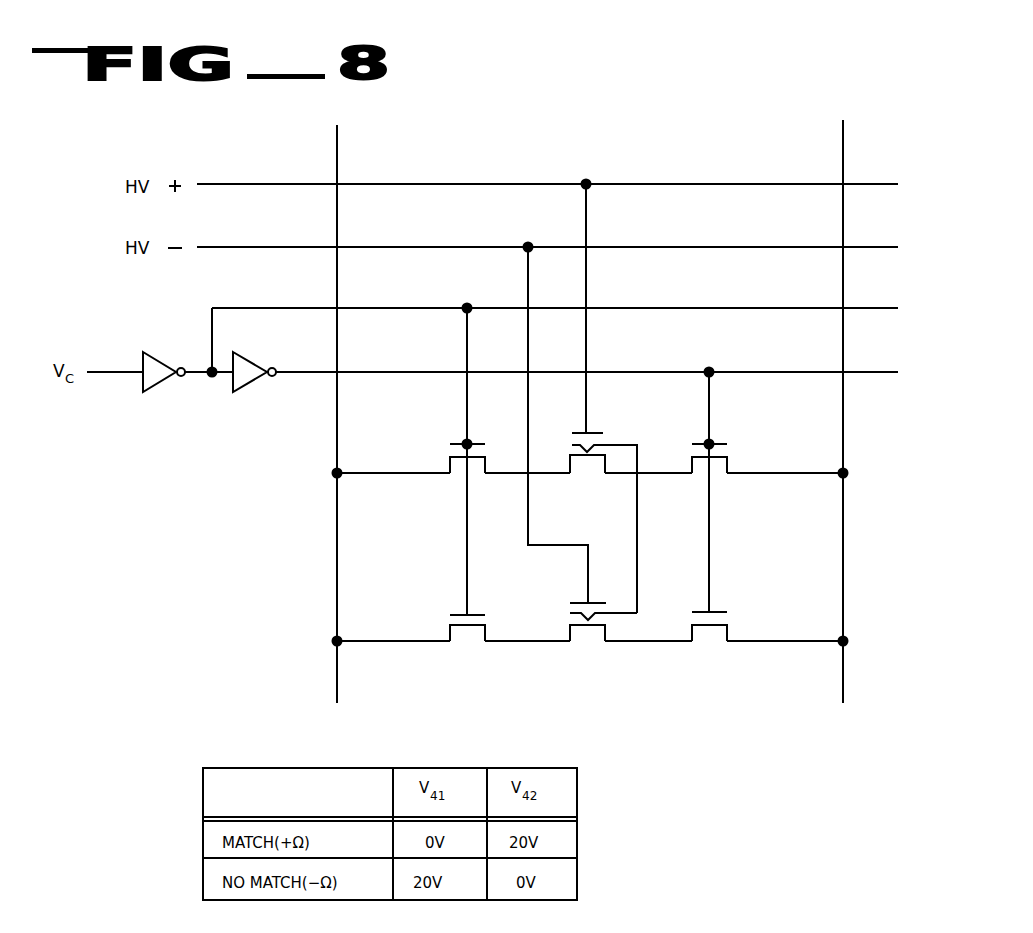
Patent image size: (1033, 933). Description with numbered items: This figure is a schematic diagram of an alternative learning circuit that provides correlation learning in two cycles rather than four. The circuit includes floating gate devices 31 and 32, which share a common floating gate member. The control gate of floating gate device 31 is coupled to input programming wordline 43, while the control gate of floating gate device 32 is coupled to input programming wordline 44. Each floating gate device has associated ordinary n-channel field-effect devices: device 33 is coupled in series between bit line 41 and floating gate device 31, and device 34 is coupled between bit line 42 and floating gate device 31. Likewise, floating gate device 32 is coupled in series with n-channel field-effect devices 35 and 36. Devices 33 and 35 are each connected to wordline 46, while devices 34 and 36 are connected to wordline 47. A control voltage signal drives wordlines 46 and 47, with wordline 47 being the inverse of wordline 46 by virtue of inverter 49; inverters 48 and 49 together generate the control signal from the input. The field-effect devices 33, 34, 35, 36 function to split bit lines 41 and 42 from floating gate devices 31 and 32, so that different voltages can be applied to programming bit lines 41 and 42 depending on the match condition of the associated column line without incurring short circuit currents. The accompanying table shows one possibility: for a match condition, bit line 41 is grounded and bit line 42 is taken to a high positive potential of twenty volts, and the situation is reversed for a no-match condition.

The floating gate device 31 is at (589, 468).
The floating gate device 32 is at (590, 643).
The n-channel field-effect device 33 is at (477, 470).
The n-channel field-effect device 34 is at (717, 470).
The n-channel field-effect device 35 is at (468, 643).
The n-channel field-effect device 36 is at (712, 643).
The bit line 41 is at (334, 545).
The bit line 42 is at (846, 545).
The input programming wordline 43 is at (689, 183).
The input programming wordline 44 is at (727, 247).
The wordline 46 is at (687, 308).
The wordline 47 is at (748, 371).
The inverter 48 is at (162, 383).
The inverter 49 is at (252, 383).